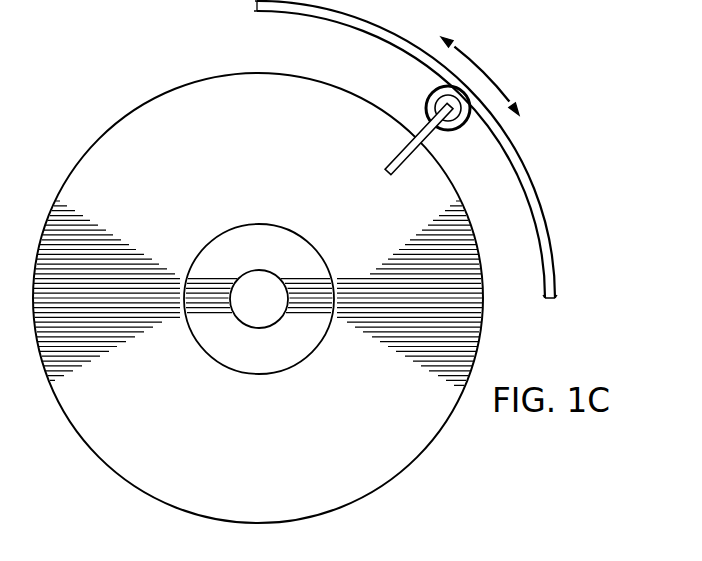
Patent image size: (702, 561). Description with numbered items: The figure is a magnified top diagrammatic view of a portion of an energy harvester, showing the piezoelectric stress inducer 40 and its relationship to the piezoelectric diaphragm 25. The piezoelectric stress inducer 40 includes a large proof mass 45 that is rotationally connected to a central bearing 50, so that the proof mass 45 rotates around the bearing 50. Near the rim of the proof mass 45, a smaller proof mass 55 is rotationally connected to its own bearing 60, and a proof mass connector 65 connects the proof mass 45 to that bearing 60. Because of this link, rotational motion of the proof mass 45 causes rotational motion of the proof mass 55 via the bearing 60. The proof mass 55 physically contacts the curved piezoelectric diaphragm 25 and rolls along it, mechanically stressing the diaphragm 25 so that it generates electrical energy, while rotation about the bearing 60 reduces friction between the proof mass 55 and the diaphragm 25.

The piezoelectric diaphragm 25 is at (554, 232).
The piezoelectric stress inducer 40 is at (85, 81).
The proof mass 45 is at (272, 162).
The bearing 50 is at (259, 376).
The proof mass 55 is at (465, 130).
The bearing 60 is at (426, 96).
The proof mass connector 65 is at (404, 172).